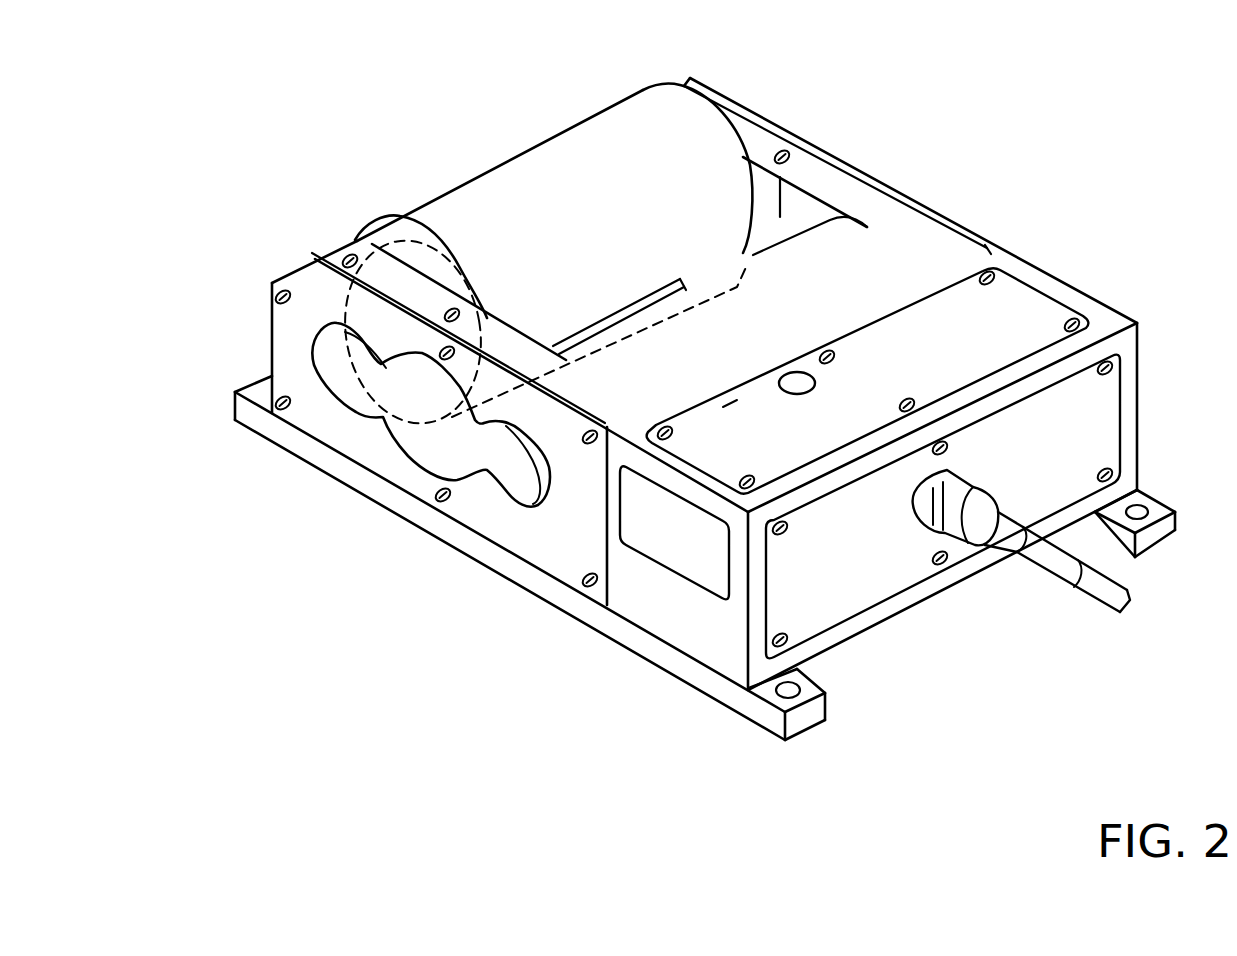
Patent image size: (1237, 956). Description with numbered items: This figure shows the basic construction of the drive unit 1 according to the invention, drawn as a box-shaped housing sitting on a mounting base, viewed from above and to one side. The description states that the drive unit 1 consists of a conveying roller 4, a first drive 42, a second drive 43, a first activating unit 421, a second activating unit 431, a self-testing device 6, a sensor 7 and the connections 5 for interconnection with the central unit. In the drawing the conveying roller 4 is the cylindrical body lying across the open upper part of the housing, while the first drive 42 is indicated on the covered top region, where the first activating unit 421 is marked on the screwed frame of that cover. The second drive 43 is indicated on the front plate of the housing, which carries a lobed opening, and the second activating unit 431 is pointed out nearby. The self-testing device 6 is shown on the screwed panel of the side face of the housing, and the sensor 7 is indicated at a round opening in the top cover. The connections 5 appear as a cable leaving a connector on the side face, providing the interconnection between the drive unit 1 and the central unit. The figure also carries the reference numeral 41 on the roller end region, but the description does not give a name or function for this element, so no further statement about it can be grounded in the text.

The drive unit 1 is at (863, 170).
The conveying roller 4 is at (506, 171).
The semicircular recess 41 is at (358, 235).
The first drive 42 is at (900, 248).
The first activating unit 421 is at (968, 302).
The second drive 43 is at (627, 377).
The second activating unit 431 is at (735, 400).
The connections 5 is at (1097, 592).
The self-testing device 6 is at (1007, 343).
The sensor 7 is at (797, 392).